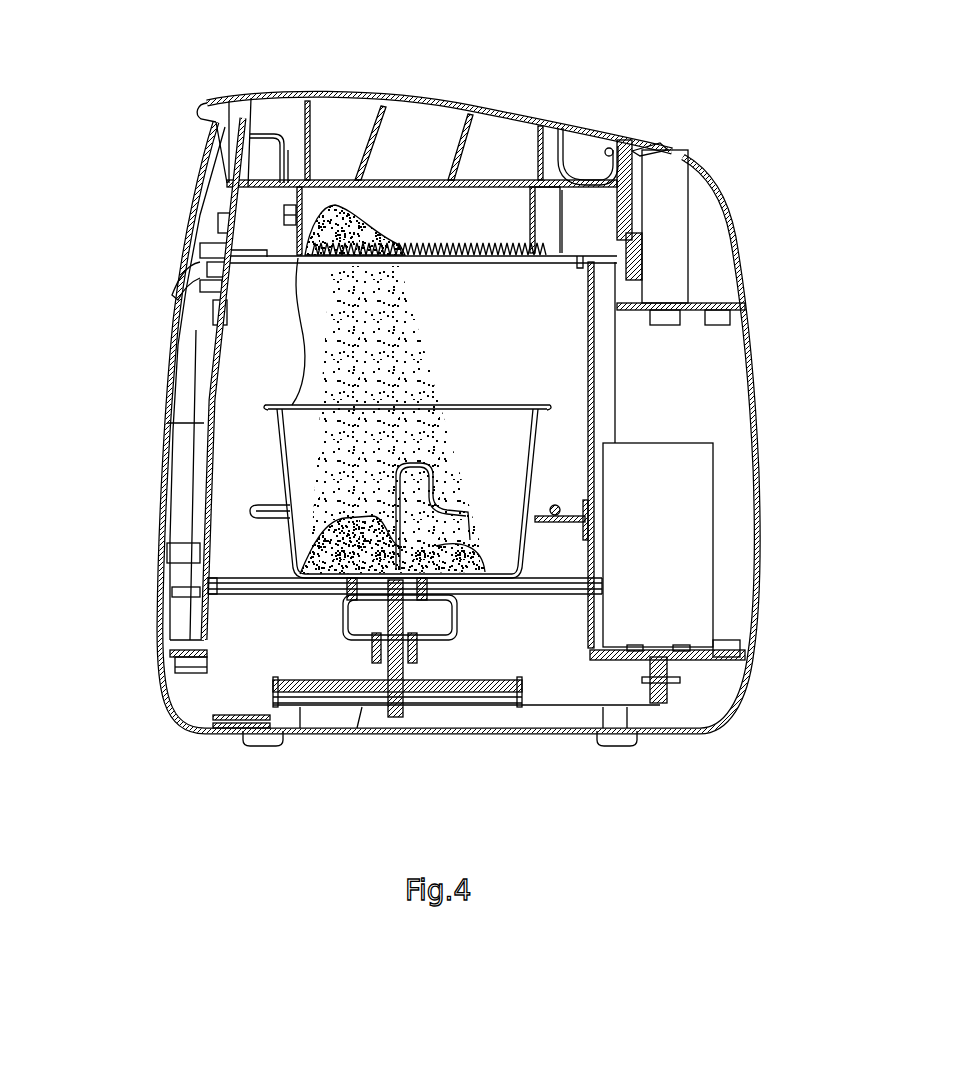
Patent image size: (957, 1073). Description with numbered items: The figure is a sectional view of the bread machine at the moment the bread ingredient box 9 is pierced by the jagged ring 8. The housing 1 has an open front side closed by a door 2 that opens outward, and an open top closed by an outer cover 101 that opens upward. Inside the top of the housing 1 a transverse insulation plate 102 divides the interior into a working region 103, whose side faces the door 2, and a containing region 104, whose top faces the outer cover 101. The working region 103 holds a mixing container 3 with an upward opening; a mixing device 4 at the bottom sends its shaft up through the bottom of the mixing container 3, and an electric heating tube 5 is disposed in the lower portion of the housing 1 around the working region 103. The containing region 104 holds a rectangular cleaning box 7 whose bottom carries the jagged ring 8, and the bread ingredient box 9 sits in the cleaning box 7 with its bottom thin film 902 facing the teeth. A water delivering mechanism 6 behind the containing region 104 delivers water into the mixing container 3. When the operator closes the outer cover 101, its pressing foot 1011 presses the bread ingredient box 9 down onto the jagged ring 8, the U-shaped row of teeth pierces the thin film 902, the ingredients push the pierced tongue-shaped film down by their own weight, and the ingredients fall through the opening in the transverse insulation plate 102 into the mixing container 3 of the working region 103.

The housing 1 is at (752, 395).
The door 2 is at (160, 435).
The mixing container 3 is at (285, 465).
The mixing device 4 is at (207, 582).
The electric heating tube 5 is at (255, 512).
The water delivering mechanism 6 is at (675, 210).
The cleaning box 7 is at (263, 202).
The jagged ring 8 is at (466, 248).
The bread ingredient box 9 is at (415, 180).
The outer cover 101 is at (480, 112).
The pressing foot 1011 is at (580, 110).
The transverse insulation plate 102 is at (226, 254).
The working region 103 is at (265, 388).
The containing region 104 is at (290, 220).
The thin film 902 is at (298, 323).